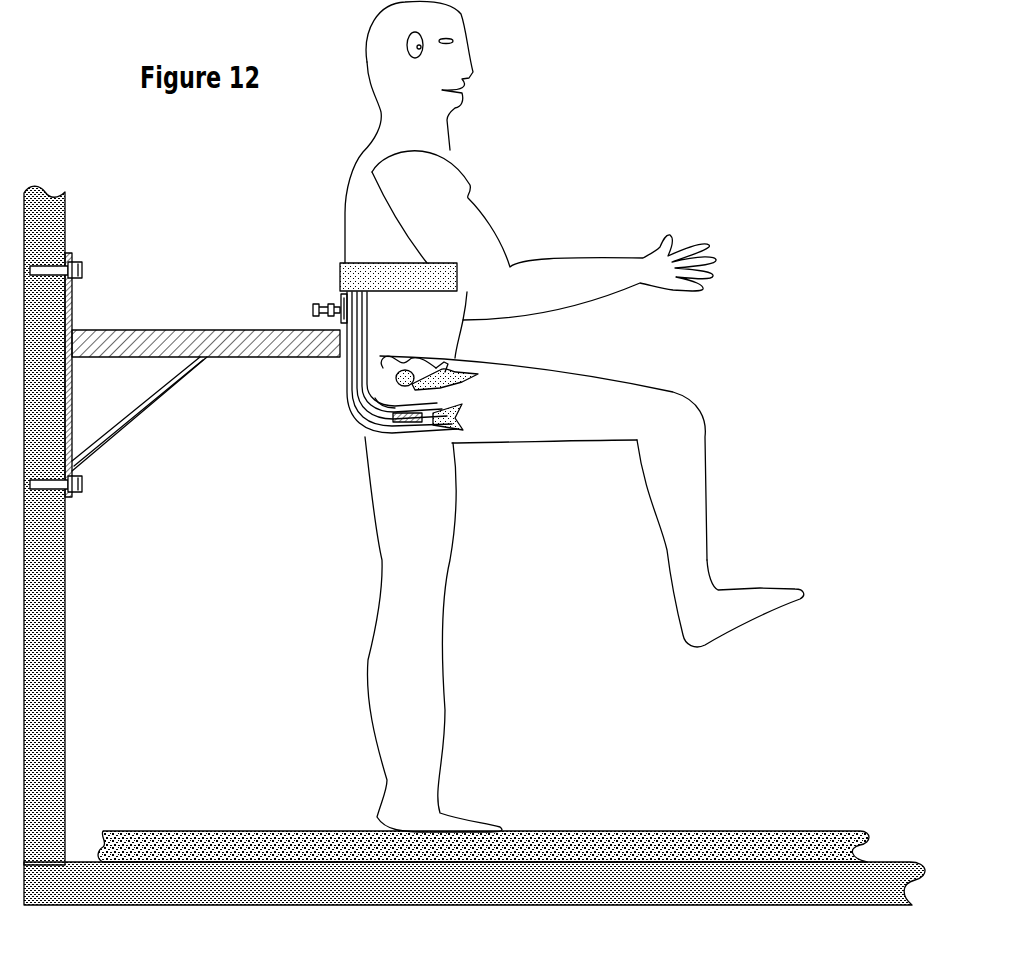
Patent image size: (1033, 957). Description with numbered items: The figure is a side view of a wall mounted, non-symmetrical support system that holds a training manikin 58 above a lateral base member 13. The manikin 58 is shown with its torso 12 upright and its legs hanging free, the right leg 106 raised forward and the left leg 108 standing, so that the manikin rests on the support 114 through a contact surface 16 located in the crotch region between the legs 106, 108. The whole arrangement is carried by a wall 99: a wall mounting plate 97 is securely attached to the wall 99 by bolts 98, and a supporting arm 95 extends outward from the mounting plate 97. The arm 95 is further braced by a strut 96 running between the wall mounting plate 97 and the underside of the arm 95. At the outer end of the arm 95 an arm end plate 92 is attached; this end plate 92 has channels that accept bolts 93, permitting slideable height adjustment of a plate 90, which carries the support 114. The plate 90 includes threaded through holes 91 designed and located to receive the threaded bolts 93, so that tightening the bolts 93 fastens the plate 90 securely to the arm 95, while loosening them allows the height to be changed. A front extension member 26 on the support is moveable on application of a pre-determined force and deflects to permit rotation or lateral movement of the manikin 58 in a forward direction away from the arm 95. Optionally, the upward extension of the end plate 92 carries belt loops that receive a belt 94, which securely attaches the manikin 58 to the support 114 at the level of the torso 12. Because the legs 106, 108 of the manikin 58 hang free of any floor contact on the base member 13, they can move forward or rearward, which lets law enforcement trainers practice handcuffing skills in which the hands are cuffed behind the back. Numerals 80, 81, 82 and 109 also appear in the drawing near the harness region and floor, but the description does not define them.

The torso 12 is at (373, 210).
The base member 13 is at (567, 393).
The contact surface 16 is at (372, 430).
The front extension member 26 is at (470, 375).
The training manikin 58 is at (497, 135).
The groin region 80 is at (430, 395).
The buckle / fastener 81 is at (435, 437).
The buckle / clasp 82 is at (424, 412).
The plate 90 is at (345, 383).
The threaded through holes 91 is at (328, 362).
The arm end plate 92 is at (340, 300).
The bolts 93 is at (312, 308).
The belt 94 is at (340, 263).
The supporting arm 95 is at (230, 335).
The strut 96 is at (118, 430).
The wall mounting plate 97 is at (68, 417).
The bolts 98 is at (80, 495).
The wall 99 is at (55, 607).
The right leg 106 is at (682, 508).
The left leg 108 is at (417, 652).
The floor mat 109 is at (717, 837).
The support 114 is at (362, 415).